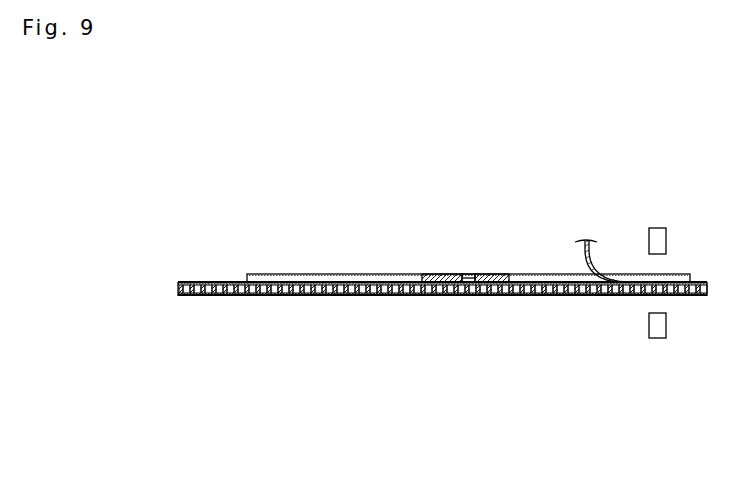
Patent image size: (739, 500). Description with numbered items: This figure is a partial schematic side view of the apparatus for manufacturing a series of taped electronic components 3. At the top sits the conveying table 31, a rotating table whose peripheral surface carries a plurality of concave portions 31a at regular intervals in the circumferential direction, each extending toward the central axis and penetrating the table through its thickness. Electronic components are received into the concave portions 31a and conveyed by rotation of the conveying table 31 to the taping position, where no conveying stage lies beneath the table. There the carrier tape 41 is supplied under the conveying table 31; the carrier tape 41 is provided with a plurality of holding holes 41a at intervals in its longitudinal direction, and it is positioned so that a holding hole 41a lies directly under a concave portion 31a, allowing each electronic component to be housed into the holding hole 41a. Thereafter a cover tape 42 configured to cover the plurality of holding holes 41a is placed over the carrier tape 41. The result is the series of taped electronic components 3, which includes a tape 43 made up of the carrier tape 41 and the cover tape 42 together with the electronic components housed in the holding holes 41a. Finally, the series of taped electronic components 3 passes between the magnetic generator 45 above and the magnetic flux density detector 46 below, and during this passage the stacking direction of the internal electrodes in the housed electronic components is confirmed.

The series of taped electronic components 3 is at (697, 277).
The conveying table 31 is at (366, 273).
The concave portions 31a is at (482, 273).
The carrier tape 41 is at (252, 298).
The holding holes 41a is at (246, 281).
The cover tape 42 is at (583, 257).
The tape 43 is at (686, 299).
The magnetic generator 45 is at (658, 228).
The magnetic flux density detector 46 is at (655, 340).